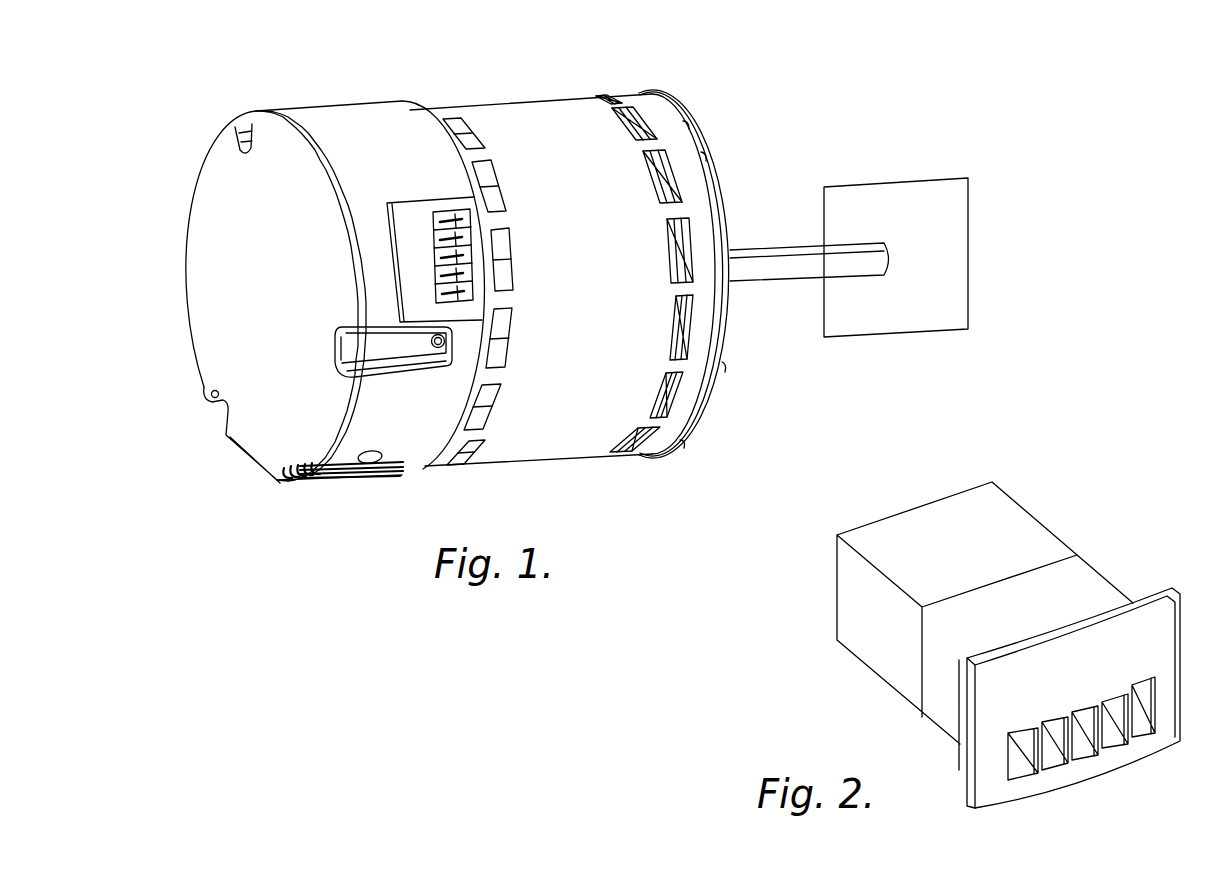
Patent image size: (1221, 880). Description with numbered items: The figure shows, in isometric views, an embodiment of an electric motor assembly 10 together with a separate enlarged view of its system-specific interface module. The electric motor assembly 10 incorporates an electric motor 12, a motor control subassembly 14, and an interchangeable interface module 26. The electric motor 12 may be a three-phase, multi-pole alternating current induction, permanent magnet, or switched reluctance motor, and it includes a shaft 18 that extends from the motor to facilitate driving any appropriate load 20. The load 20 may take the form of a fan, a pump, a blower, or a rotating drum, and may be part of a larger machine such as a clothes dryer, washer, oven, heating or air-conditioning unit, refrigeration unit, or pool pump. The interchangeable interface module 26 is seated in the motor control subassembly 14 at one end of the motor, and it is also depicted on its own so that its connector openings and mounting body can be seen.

In FIG. 1, the motor assembly 10 is at (843, 98).
In FIG. 1, the motor housing 12 is at (611, 84).
In FIG. 1, the end cap 14 is at (322, 88).
In FIG. 1, the motor shaft 18 is at (735, 278).
In FIG. 1, the mounting plate 20 is at (963, 192).
In FIG. 1, the electrical connector 26 is at (417, 218).
In FIG. 2, the electrical connector 26 is at (1050, 542).